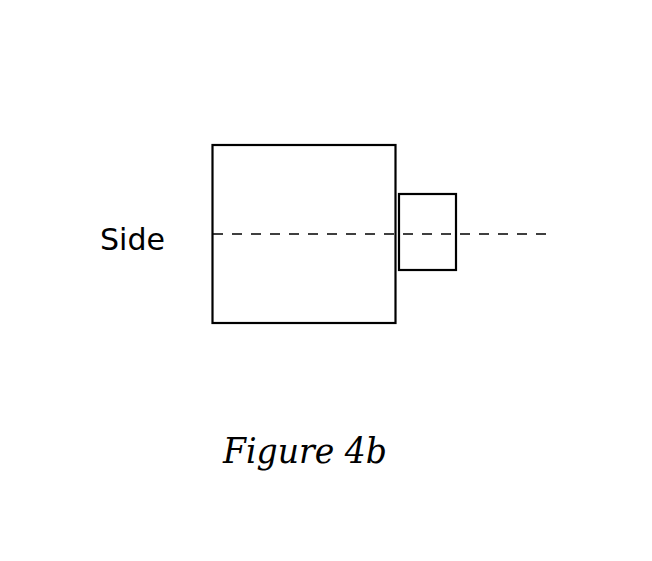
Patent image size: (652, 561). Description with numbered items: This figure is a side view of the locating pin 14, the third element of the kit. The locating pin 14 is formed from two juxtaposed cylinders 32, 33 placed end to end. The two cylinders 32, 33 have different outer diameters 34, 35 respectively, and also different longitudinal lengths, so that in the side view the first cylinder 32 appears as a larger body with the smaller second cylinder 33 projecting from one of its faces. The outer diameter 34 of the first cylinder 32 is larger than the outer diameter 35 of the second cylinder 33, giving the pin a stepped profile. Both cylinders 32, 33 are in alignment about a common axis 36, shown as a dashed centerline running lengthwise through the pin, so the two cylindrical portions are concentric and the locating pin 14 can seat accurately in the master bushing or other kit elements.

The locating pin 14 is at (417, 165).
The cylinder 32 is at (317, 209).
The cylinder 33 is at (444, 229).
The outer diameter 34 is at (254, 137).
The outer diameter 35 is at (420, 187).
The common axis 36 is at (555, 232).